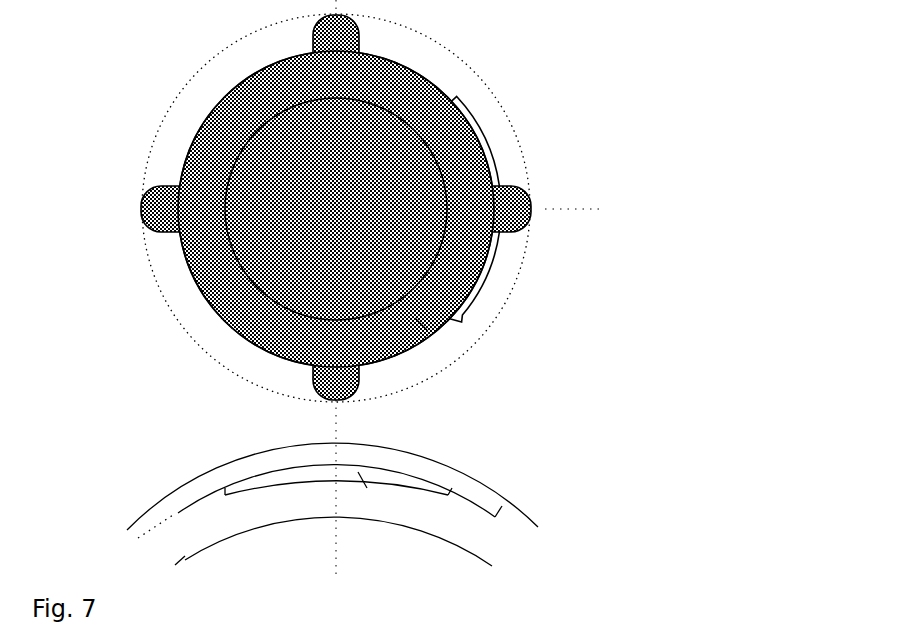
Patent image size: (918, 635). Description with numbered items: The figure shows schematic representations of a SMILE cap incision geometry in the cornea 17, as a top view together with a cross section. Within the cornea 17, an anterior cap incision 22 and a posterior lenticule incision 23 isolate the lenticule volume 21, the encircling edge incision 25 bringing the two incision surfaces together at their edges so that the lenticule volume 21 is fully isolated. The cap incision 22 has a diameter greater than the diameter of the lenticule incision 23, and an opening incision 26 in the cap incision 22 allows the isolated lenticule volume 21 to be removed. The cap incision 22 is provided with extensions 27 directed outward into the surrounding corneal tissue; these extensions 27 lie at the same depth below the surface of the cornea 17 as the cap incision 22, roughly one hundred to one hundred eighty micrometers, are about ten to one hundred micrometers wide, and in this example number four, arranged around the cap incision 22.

The cornea 17 is at (124, 101).
The lenticule volume 21 is at (433, 337).
The cap incision 22 is at (410, 110).
The lenticule incision 23 is at (262, 160).
The encircling edge incision 25 is at (462, 108).
The opening incision 26 is at (492, 150).
The extensions 27 is at (138, 203).